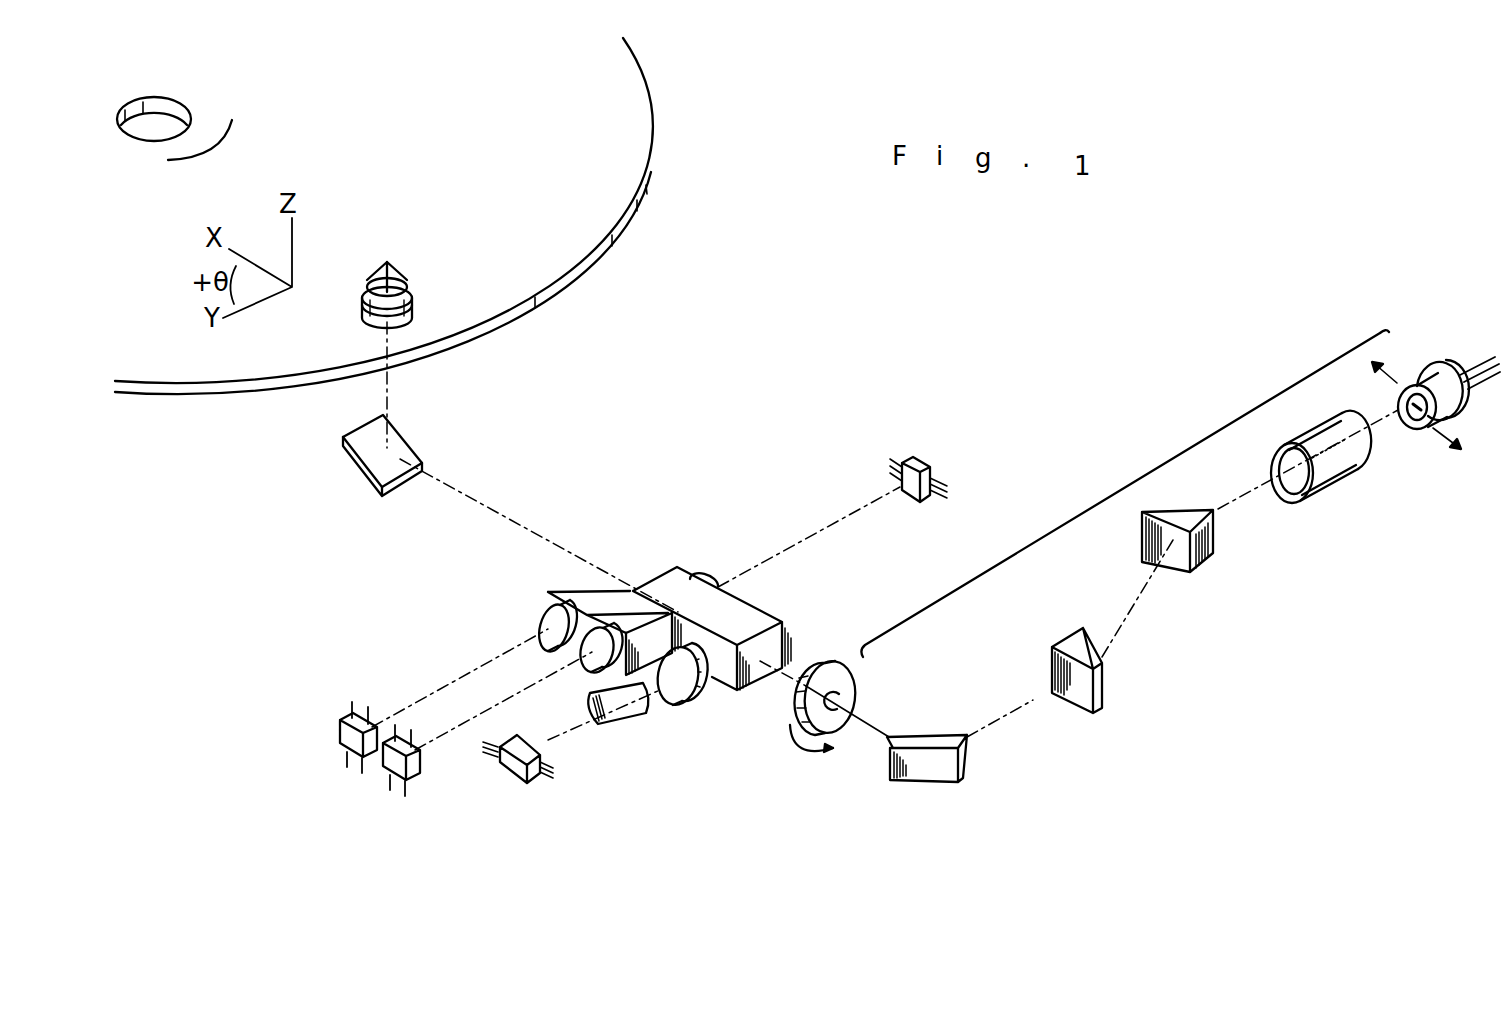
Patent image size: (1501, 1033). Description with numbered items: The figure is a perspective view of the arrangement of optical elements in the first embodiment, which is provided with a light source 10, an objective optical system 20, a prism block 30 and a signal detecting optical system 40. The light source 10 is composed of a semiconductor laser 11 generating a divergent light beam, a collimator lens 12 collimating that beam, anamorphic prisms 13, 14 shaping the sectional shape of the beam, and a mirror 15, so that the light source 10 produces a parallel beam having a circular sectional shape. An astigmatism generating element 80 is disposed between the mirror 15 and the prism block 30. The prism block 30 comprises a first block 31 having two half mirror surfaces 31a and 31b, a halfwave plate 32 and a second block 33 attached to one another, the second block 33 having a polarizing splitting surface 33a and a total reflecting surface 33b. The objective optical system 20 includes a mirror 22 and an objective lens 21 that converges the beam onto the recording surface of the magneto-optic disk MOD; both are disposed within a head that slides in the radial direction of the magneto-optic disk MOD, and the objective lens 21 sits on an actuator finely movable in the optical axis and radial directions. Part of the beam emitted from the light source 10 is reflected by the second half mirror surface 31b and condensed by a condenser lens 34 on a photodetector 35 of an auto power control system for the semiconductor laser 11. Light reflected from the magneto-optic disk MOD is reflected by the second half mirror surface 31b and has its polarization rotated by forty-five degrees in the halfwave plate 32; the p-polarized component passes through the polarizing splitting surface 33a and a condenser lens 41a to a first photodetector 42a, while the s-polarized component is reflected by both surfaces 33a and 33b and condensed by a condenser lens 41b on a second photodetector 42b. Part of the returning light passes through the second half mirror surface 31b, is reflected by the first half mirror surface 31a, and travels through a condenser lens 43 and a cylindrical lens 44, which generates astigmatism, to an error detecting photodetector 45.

The magneto-optic disk MOD is at (573, 238).
The light source 10 is at (1124, 488).
The semiconductor laser 11 is at (1438, 433).
The collimator lens 12 is at (1340, 482).
The anamorphic prism 13 is at (1176, 562).
The anamorphic prism 14 is at (1100, 717).
The mirror 15 is at (917, 787).
The objective optical system 20 is at (483, 358).
The objective lens 21 is at (412, 322).
The mirror 22 is at (400, 442).
The prism block 30 is at (673, 612).
The first block 31 is at (762, 620).
The first half mirror surface 31a is at (760, 600).
The second half mirror surface 31b is at (676, 560).
The halfwave plate 32 is at (655, 610).
The second block 33 is at (604, 612).
The polarizing splitting surface 33a is at (627, 590).
The total reflecting surface 33b is at (549, 592).
The condenser lens 34 is at (703, 574).
The photodetector 35 is at (917, 460).
The signal detecting optical system 40 is at (358, 645).
The condenser lens 41a is at (587, 647).
The condenser lens 41b is at (545, 620).
The first photodetector 42a is at (392, 762).
The second photodetector 42b is at (350, 737).
The condenser lens 43 is at (683, 692).
The cylindrical lens 44 is at (620, 717).
The error detecting photodetector 45 is at (520, 777).
The astigmatism generating element 80 is at (845, 670).